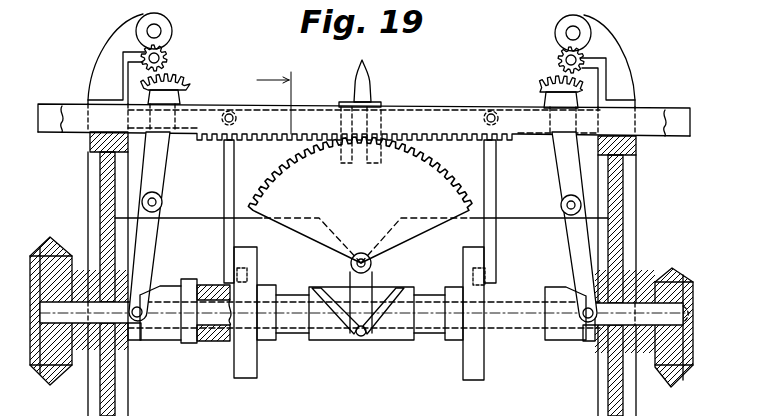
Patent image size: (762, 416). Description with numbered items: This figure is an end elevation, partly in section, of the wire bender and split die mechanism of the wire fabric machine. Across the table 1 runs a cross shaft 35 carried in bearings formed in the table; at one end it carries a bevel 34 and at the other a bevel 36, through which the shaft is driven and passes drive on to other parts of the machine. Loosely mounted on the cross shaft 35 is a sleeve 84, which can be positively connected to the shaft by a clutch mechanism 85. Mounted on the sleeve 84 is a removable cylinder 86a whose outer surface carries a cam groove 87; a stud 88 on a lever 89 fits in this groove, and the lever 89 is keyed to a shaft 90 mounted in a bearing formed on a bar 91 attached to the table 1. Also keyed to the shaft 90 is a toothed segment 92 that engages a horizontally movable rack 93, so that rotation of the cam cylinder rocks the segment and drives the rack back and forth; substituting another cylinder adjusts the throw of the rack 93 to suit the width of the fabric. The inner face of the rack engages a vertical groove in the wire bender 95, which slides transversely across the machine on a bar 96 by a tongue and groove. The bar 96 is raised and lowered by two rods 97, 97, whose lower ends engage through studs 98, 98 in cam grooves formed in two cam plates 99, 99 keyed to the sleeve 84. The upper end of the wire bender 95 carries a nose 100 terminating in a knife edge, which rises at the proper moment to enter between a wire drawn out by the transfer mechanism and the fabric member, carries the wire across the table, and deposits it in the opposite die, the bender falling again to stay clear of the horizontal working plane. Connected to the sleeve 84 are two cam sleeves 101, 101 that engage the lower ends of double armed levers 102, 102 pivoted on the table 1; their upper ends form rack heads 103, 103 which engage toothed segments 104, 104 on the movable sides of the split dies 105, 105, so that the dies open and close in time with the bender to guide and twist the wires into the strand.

The table 1 is at (102, 170).
The bevel 34 is at (48, 380).
The cross shaft 35 is at (84, 313).
The bevel 36 is at (683, 262).
The sleeve 84 is at (492, 340).
The clutch mechanism 85 is at (190, 345).
The cylinder 86a is at (410, 340).
The cam groove 87 is at (337, 308).
The stud 88 is at (358, 338).
The lever 89 is at (372, 290).
The shaft 90 is at (355, 253).
The bar 91 is at (528, 192).
The toothed segment 92 is at (318, 252).
The rack 93 is at (485, 107).
The wire bender 95 is at (342, 163).
The bar 96 is at (676, 114).
The rods 97 is at (223, 172).
The studs 98 is at (237, 272).
The cam plates 99 is at (252, 348).
The nose 100 is at (366, 75).
The cam sleeves 101 is at (150, 342).
The double armed levers 102 is at (157, 230).
The rack heads 103 is at (188, 82).
The toothed segments 104 is at (182, 58).
The split dies 105 is at (140, 22).